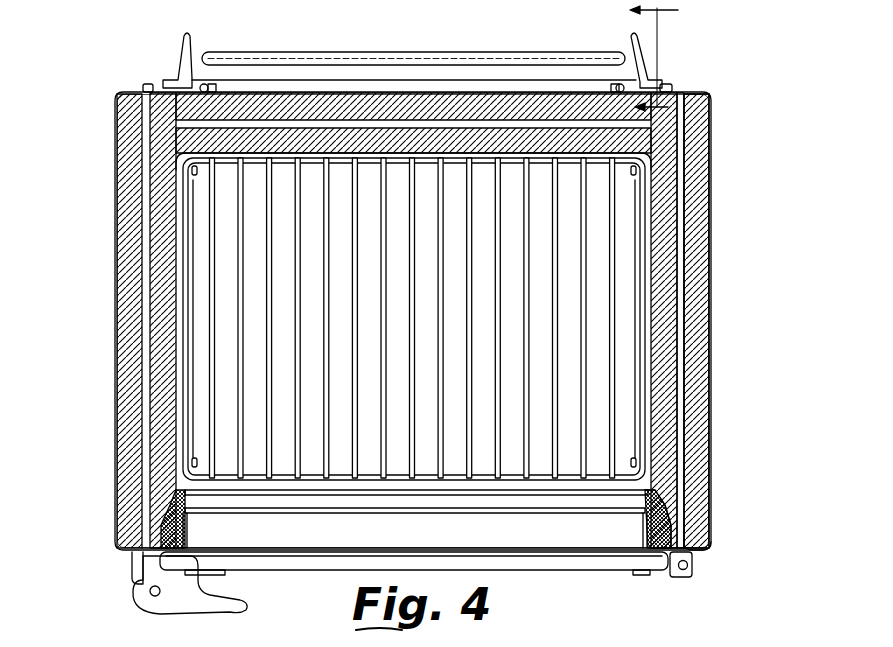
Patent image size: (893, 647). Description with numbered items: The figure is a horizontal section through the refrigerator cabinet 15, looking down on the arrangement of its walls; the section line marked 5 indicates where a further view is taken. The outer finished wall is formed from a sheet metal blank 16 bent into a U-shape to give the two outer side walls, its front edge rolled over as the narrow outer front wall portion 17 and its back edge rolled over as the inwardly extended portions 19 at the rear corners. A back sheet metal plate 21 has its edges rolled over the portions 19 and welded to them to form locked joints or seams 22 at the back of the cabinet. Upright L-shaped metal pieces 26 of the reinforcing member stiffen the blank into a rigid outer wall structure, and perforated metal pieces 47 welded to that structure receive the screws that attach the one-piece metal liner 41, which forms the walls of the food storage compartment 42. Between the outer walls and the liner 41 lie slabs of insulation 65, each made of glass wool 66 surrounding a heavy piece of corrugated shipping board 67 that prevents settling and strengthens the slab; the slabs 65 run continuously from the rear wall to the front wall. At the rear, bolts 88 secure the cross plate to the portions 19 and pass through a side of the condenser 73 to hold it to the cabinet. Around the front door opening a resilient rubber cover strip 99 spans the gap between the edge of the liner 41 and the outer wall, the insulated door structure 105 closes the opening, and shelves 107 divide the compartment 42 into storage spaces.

The refrigerator cabinet 15 is at (125, 367).
The sheet metal blank 16 is at (710, 344).
The outer front wall portion 17 is at (692, 560).
The inwardly extended back edge portion 19 is at (147, 90).
The back sheet metal plate 21 is at (378, 92).
The locked joints or seams 22 is at (203, 92).
The upright L-shaped metal pieces 26 is at (692, 542).
The one-piece metal liner 41 is at (175, 325).
The food storage compartment 42 is at (200, 233).
The metal pieces 47 is at (665, 522).
The slabs of insulation 65 is at (697, 198).
The glass wool 66 is at (697, 288).
The corrugated shipping board 67 is at (680, 250).
The condenser 73 is at (338, 52).
The bolts 88 is at (167, 84).
The resilient molding member or cover strip 99 is at (177, 520).
The insulated door structure 105 is at (414, 551).
The shelves 107 is at (187, 285).
The section line 5- 5 is at (640, 59).